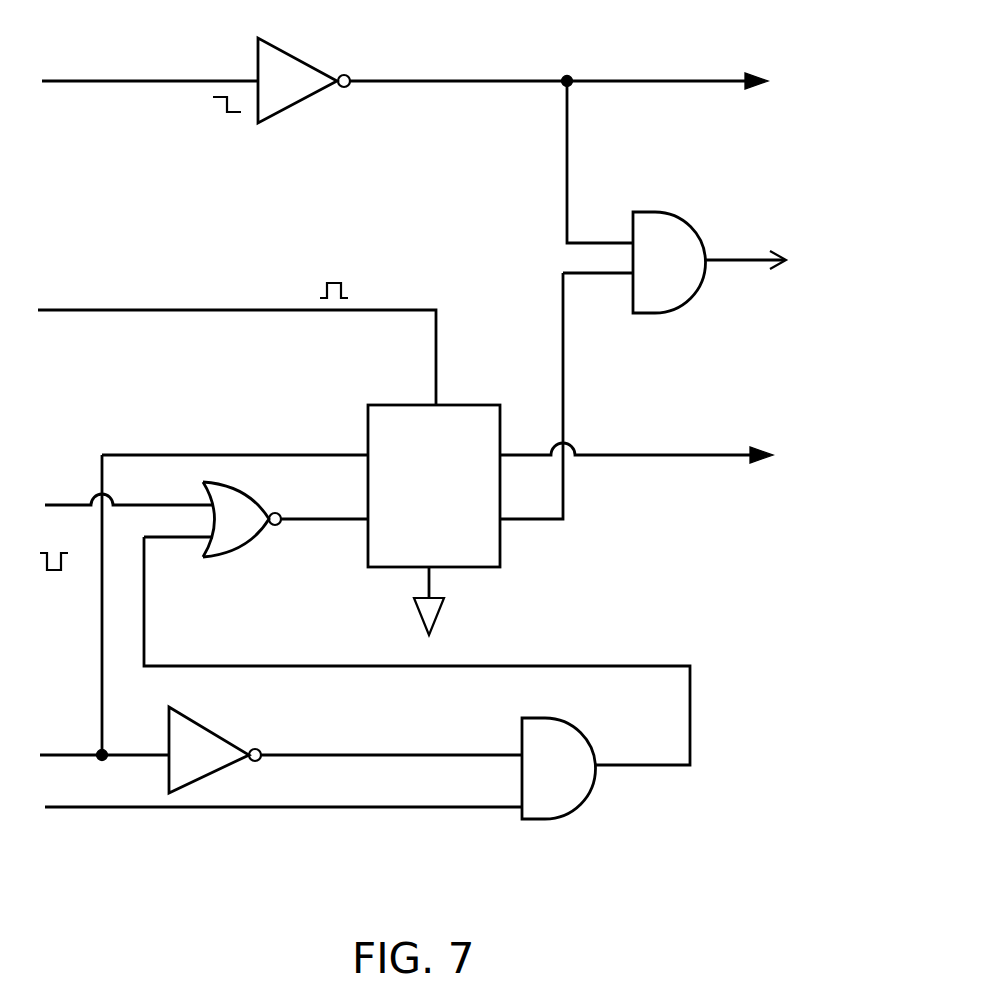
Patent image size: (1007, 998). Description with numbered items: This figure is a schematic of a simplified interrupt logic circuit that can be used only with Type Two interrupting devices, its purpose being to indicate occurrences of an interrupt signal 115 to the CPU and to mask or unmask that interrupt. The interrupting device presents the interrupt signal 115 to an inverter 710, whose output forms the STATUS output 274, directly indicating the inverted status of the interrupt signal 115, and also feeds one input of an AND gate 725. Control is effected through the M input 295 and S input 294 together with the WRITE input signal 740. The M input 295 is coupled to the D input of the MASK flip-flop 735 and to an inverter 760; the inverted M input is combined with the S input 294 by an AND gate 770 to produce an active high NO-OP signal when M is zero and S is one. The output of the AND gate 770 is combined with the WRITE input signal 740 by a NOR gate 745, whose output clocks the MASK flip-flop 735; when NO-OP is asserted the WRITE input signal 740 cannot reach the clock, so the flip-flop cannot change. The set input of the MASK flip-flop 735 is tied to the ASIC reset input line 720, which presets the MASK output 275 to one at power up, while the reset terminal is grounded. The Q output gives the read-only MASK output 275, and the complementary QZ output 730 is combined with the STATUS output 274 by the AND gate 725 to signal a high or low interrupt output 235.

The interrupt signal 115 is at (137, 81).
The inverter 710 is at (290, 56).
The STATUS output 274 is at (661, 81).
The AND gate 725 is at (648, 212).
The interrupt output 235 is at (723, 258).
The ASIC reset input line 720 is at (395, 309).
The MASK flip-flop 735 is at (462, 405).
The MASK output 275 is at (655, 455).
The QZ output 730 is at (520, 522).
The WRITE input signal 740 is at (194, 605).
The NOR gate 745 is at (228, 553).
The M input 295 is at (103, 758).
The S input 294 is at (283, 811).
The inverter 760 is at (216, 766).
The AND gate 770 is at (566, 809).